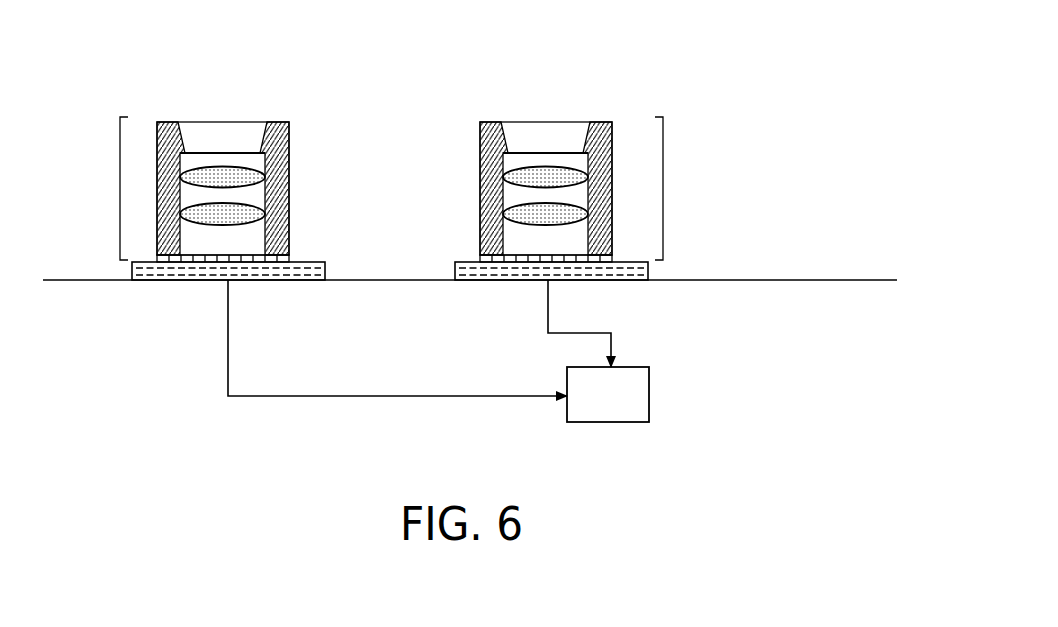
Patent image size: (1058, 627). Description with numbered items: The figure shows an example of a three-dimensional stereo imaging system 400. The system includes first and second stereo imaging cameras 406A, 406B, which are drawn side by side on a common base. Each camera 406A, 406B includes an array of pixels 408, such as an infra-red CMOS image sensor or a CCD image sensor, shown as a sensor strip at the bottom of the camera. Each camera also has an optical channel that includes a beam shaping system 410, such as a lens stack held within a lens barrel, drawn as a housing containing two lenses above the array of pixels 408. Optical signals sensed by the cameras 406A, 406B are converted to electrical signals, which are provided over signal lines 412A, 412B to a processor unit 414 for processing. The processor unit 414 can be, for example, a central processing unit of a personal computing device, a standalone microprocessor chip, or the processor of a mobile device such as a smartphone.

The imaging system 400 is at (126, 77).
The first stereo imaging camera 406A is at (117, 195).
The second stereo imaging camera 406B is at (666, 198).
The beam shaping system 410 is at (290, 187).
The array of pixels 408 is at (245, 255).
The signal line 412A is at (227, 372).
The signal line 412B is at (547, 313).
The processor unit 414 is at (618, 423).